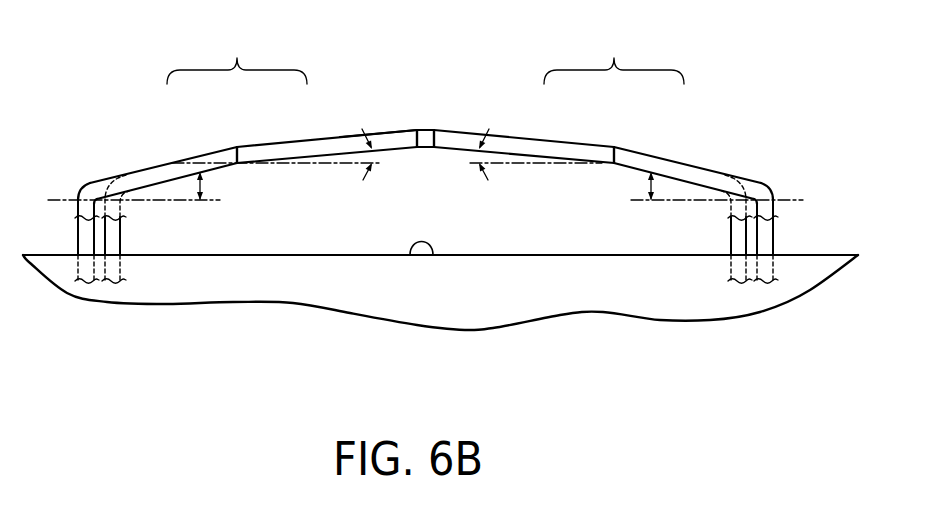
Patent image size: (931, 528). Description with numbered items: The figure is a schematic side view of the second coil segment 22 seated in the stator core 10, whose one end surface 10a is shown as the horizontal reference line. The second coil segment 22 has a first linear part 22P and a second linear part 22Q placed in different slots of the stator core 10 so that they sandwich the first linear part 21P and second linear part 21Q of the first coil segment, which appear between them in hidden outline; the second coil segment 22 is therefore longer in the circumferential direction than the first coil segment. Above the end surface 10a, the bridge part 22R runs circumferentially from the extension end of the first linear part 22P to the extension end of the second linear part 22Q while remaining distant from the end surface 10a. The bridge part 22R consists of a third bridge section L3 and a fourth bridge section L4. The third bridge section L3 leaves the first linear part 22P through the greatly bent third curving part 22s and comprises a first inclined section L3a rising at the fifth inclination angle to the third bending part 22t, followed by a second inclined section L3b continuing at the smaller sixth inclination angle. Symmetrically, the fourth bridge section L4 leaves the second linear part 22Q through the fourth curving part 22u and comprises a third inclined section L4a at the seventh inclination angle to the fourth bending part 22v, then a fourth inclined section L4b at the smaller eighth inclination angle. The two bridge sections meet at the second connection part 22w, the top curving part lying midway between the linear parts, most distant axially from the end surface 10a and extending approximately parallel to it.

The stator core 10 is at (320, 292).
The one end surface 10a is at (433, 255).
The second coil segment 22 is at (426, 154).
The third curving part 22s is at (84, 191).
The fourth curving part 22u is at (770, 190).
The first linear part 22P is at (85, 236).
The second linear part 22Q is at (765, 236).
The first linear part 21P is at (115, 237).
The second linear part 21Q is at (737, 236).
The third bending part 22t is at (241, 150).
The fourth bending part 22v is at (599, 160).
The second connection part 22w is at (427, 130).
The bridge part 22R is at (383, 125).
The third bridge section L3 is at (237, 56).
The first inclined section L3a is at (173, 148).
The second inclined section L3b is at (302, 147).
The fourth bridge section L4 is at (614, 56).
The third inclined section L4a is at (678, 148).
The fourth inclined section L4b is at (549, 147).